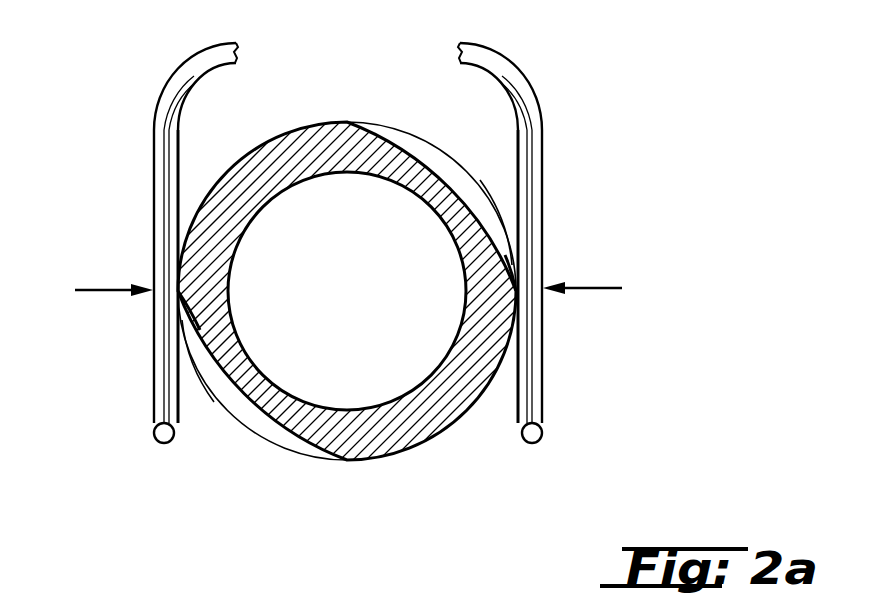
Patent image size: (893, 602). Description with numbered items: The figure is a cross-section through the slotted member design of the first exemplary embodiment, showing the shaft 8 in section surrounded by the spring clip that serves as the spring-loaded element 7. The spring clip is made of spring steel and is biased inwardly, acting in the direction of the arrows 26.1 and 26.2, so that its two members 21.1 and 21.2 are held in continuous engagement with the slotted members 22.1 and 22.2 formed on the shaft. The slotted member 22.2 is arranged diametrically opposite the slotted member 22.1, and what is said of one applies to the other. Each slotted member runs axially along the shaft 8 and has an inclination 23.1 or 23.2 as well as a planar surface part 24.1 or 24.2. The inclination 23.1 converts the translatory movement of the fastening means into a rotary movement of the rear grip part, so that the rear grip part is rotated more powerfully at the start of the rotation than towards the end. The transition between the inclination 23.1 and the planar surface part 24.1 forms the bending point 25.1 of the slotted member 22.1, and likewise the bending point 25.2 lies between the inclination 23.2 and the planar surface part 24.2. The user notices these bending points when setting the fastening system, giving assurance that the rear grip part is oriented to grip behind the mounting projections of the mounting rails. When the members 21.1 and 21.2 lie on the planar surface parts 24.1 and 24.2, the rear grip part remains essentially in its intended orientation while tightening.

The spring-loaded element 7 is at (342, 278).
The shaft 8 is at (340, 140).
The member of the spring clip 21.1 is at (157, 136).
The member of the spring clip 21.2 is at (528, 224).
The slotted member 22.1 is at (214, 413).
The slotted member 22.2 is at (488, 143).
The inclination 23.1 is at (205, 325).
The inclination 23.2 is at (513, 268).
The planar surface part 24.1 is at (250, 437).
The planar surface part 24.2 is at (447, 165).
The bending point 25.1 is at (203, 383).
The bending point 25.2 is at (490, 205).
The arrow 26.1 is at (100, 288).
The arrow 26.2 is at (600, 290).